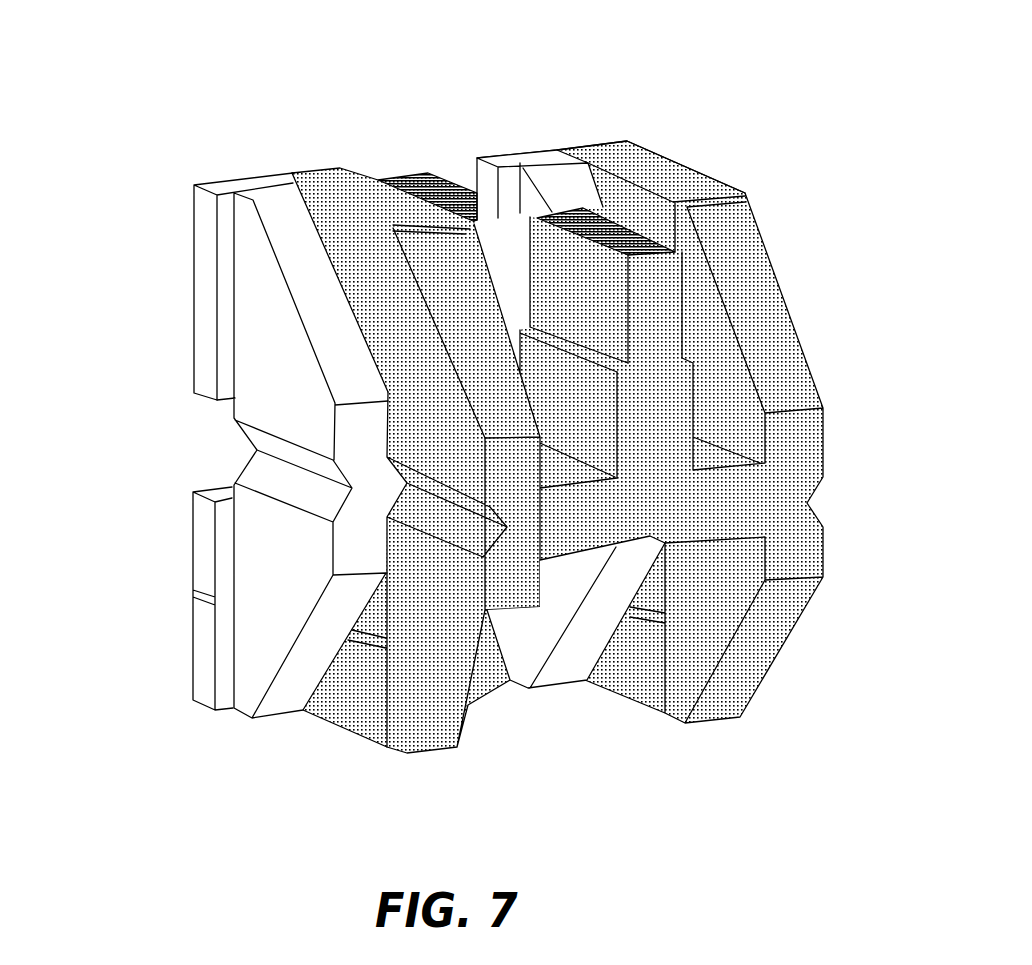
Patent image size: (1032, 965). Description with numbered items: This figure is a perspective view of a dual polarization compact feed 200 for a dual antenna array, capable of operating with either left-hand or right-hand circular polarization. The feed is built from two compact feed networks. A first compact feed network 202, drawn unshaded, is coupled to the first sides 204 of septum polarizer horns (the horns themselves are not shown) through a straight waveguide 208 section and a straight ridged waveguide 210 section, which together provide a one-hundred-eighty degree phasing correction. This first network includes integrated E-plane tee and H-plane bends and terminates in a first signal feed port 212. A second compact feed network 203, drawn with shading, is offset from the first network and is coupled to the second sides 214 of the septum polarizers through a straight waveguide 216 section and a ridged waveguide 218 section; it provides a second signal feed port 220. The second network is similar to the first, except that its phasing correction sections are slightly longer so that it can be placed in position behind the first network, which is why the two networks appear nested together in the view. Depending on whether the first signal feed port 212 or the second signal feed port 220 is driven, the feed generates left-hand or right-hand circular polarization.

The dual polarization compact feed 200 is at (128, 91).
The first compact feed network 202 is at (313, 658).
The second compact feed network 203 is at (762, 292).
The first sides of septum polarizer horns 204 is at (520, 163).
The straight waveguide section 208 is at (202, 313).
The straight ridged waveguide section 210 is at (202, 577).
The first signal feed port 212 is at (420, 174).
The second sides of septum polarizers 214 is at (597, 144).
The straight waveguide section 216 is at (362, 257).
The ridged waveguide section 218 is at (362, 707).
The second signal feed port 220 is at (573, 210).